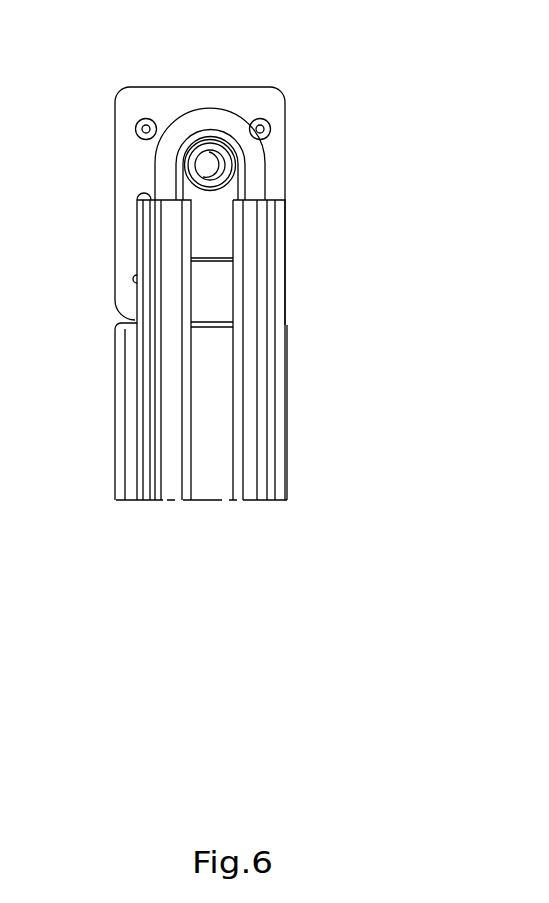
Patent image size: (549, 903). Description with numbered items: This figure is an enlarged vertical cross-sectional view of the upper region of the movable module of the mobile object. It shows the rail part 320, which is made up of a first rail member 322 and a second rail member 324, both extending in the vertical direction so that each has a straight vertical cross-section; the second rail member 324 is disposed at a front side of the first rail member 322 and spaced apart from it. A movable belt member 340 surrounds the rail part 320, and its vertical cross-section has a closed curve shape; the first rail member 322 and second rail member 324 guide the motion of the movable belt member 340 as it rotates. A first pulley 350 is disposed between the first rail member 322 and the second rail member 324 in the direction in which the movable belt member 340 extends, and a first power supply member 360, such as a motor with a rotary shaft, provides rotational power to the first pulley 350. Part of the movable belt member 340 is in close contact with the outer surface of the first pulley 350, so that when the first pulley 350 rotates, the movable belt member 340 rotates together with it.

The rail part 320 is at (438, 58).
The first rail member 322 is at (233, 393).
The second rail member 324 is at (165, 302).
The movable belt member 340 is at (244, 190).
The first pulley 350 is at (208, 140).
The first power supply member 360 is at (140, 98).